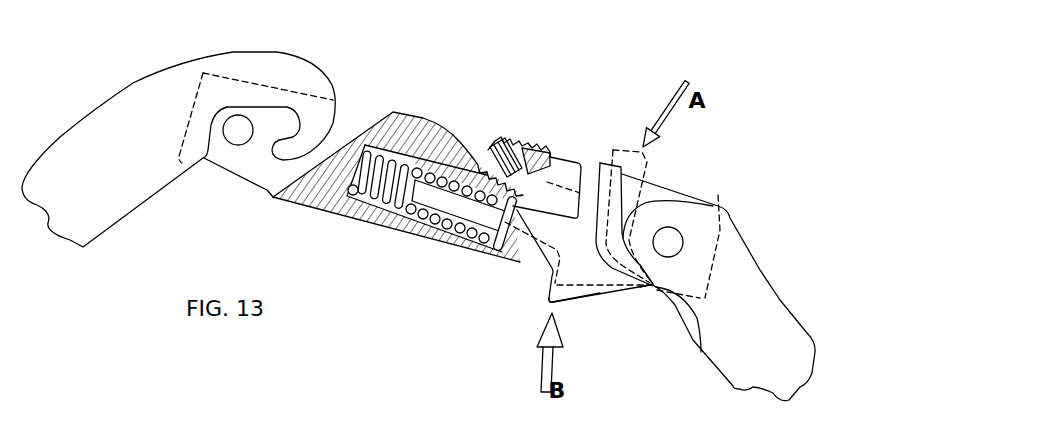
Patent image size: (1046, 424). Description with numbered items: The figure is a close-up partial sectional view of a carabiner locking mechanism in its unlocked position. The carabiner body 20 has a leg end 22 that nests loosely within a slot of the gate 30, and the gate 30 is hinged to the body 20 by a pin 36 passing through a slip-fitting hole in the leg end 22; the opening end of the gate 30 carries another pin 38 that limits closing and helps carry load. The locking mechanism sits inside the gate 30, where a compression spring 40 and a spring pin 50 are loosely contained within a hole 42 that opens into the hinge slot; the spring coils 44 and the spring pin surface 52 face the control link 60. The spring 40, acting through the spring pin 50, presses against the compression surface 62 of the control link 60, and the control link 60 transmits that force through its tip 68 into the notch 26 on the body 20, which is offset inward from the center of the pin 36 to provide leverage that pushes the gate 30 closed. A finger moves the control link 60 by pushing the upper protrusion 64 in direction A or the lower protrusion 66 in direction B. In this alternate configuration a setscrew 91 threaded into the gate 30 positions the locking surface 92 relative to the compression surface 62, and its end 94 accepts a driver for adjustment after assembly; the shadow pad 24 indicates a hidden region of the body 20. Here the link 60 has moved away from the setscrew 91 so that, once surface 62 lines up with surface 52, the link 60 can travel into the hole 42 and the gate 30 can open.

The body 20 is at (120, 118).
The leg end 22 is at (655, 213).
The pad 24 is at (317, 113).
The notch 26 is at (698, 323).
The gate 30 is at (333, 190).
The pin 36 is at (668, 240).
The pin 38 is at (238, 133).
The compression spring 40 is at (378, 208).
The hole 42 is at (402, 222).
The spring coils 44 is at (357, 170).
The spring pin 50 is at (442, 207).
The surface 52 is at (487, 232).
The control link 60 is at (588, 263).
The compression surface 62 is at (568, 222).
The protrusion 64 is at (615, 150).
The protrusion 66 is at (573, 300).
The tip 68 is at (620, 283).
The setscrew 91 is at (503, 147).
The locking surface 92 is at (527, 173).
The end 94 is at (488, 163).